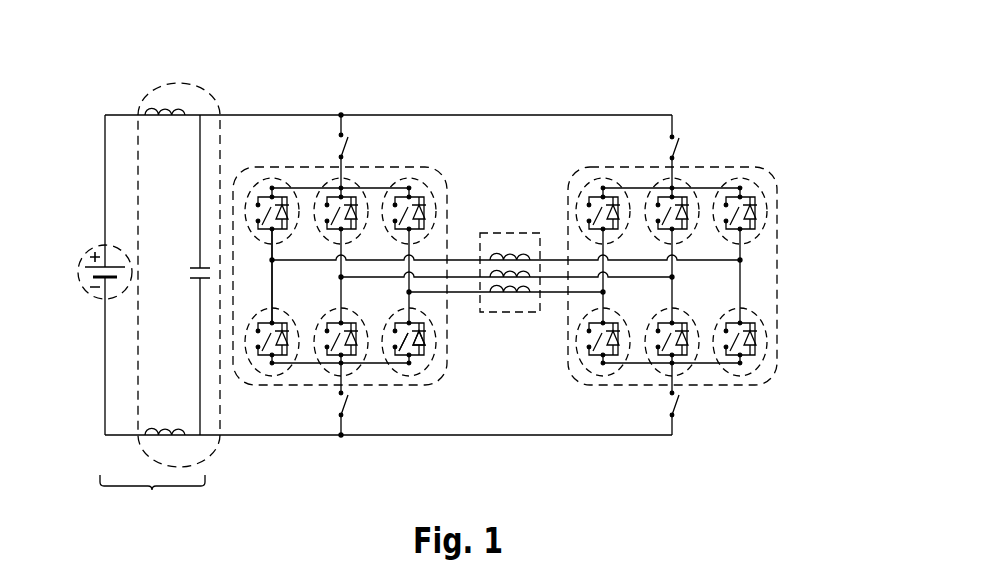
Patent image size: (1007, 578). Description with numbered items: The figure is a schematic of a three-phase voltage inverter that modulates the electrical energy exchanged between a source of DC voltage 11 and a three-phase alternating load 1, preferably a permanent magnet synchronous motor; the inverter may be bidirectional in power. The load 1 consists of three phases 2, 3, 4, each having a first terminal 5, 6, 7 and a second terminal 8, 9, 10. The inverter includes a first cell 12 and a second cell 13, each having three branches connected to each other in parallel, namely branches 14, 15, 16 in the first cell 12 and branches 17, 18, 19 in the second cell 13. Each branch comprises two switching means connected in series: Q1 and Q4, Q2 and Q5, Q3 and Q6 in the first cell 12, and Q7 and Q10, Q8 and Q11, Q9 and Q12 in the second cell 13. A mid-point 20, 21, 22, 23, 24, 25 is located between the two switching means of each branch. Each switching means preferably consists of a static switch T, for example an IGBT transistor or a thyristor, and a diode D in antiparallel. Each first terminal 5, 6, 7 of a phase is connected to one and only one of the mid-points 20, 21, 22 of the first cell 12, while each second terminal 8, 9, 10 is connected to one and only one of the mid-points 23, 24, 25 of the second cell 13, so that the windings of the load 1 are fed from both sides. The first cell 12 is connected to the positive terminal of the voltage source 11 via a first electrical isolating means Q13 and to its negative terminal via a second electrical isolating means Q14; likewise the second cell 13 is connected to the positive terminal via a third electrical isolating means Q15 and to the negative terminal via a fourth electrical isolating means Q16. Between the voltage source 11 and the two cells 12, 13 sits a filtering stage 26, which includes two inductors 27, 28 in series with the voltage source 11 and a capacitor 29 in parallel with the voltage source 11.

The three-phase alternating load 1 is at (510, 233).
The phase 2 is at (494, 243).
The phase 3 is at (526, 243).
The phase 4 is at (516, 298).
The first terminal 5 is at (269, 293).
The first terminal 6 is at (468, 262).
The first terminal 7 is at (464, 294).
The second terminal 8 is at (735, 280).
The second terminal 9 is at (623, 296).
The second terminal 10 is at (556, 306).
The source of DC voltage 11 is at (78, 268).
The first cell 12 is at (446, 176).
The second cell 13 is at (777, 207).
The branch 14 is at (281, 180).
The branch 15 is at (318, 180).
The branch 16 is at (396, 181).
The branch 17 is at (584, 180).
The branch 18 is at (682, 188).
The branch 19 is at (747, 179).
The mid-point 20 is at (270, 260).
The mid-point 21 is at (332, 373).
The mid-point 22 is at (409, 292).
The mid-point 23 is at (745, 264).
The mid-point 24 is at (673, 278).
The mid-point 25 is at (601, 294).
The filtering stage 26 is at (160, 303).
The inductor 27 is at (167, 106).
The inductor 28 is at (170, 426).
The capacitor 29 is at (191, 268).
The switching means Q1 is at (256, 178).
The switching means Q2 is at (370, 193).
The switching means Q3 is at (418, 186).
The switching means Q4 is at (268, 388).
The switching means Q5 is at (335, 373).
The switching means Q6 is at (414, 371).
The switching means Q7 is at (592, 180).
The switching means Q8 is at (699, 200).
The switching means Q9 is at (770, 196).
The switching means Q10 is at (585, 379).
The switching means Q11 is at (692, 346).
The switching means Q12 is at (753, 352).
The first electrical isolating means Q13 is at (345, 135).
The second electrical isolating means Q14 is at (345, 398).
The third electrical isolating means Q15 is at (677, 128).
The fourth electrical isolating means Q16 is at (678, 414).
The static switch T is at (398, 348).
The diode D is at (423, 351).